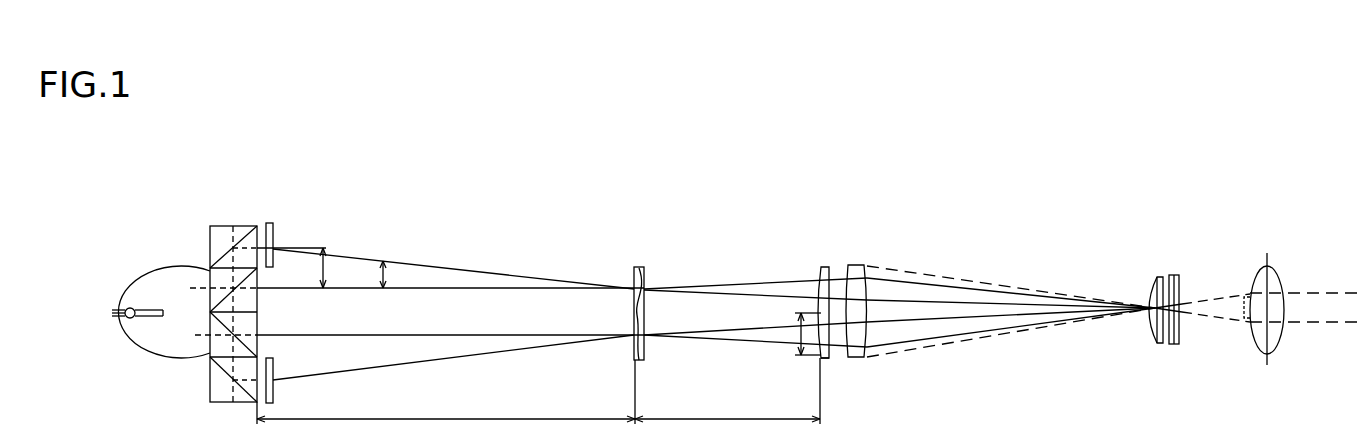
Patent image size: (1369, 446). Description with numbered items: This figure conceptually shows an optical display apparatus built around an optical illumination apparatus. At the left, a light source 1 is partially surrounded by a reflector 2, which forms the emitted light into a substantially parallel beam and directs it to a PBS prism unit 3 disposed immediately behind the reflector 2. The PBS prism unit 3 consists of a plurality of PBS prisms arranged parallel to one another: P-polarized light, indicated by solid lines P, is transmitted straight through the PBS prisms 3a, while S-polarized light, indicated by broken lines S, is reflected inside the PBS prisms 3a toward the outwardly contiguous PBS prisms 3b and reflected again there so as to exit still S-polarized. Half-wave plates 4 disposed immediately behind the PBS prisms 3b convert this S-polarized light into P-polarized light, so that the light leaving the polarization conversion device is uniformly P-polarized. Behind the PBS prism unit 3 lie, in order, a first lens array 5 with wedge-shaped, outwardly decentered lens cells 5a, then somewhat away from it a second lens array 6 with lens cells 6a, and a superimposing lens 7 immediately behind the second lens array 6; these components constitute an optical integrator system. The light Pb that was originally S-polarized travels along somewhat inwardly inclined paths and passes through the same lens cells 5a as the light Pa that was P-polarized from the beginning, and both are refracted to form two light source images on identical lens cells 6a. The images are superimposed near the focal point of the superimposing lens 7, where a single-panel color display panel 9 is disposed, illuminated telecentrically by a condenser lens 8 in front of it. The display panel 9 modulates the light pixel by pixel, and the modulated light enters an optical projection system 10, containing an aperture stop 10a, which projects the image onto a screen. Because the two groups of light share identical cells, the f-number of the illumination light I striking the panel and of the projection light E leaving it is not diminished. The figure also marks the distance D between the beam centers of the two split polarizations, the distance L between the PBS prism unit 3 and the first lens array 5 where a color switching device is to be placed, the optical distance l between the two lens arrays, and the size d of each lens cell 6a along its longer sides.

The light source 1 is at (125, 309).
The reflector 2 is at (143, 281).
The PBS prism unit 3 is at (206, 302).
The PBS prisms 3a is at (209, 280).
The PBS prisms 3b is at (190, 411).
The half-wave plates 4 is at (272, 222).
The first lens array 5 is at (664, 312).
The lens cells 5a is at (641, 349).
The second lens array 6 is at (842, 324).
The lens cells 6a is at (829, 358).
The superimposing lens 7 is at (858, 267).
The condenser lens 8 is at (1150, 282).
The display panel 9 is at (1173, 275).
The optical projection system 10 is at (1295, 302).
The aperture stop 10a is at (1268, 363).
The P-polarized light P is at (203, 333).
The S-polarized light S is at (200, 336).
The light Pa is at (318, 290).
The light Pb is at (480, 272).
The distance between beam centers D is at (311, 268).
The distance between PBS prism unit and first lens array L is at (446, 392).
The optical distance between first and second lens arrays l is at (727, 391).
The size of lens cell along longer sides d is at (796, 343).
The illumination light I is at (1003, 344).
The projection light E is at (1219, 327).